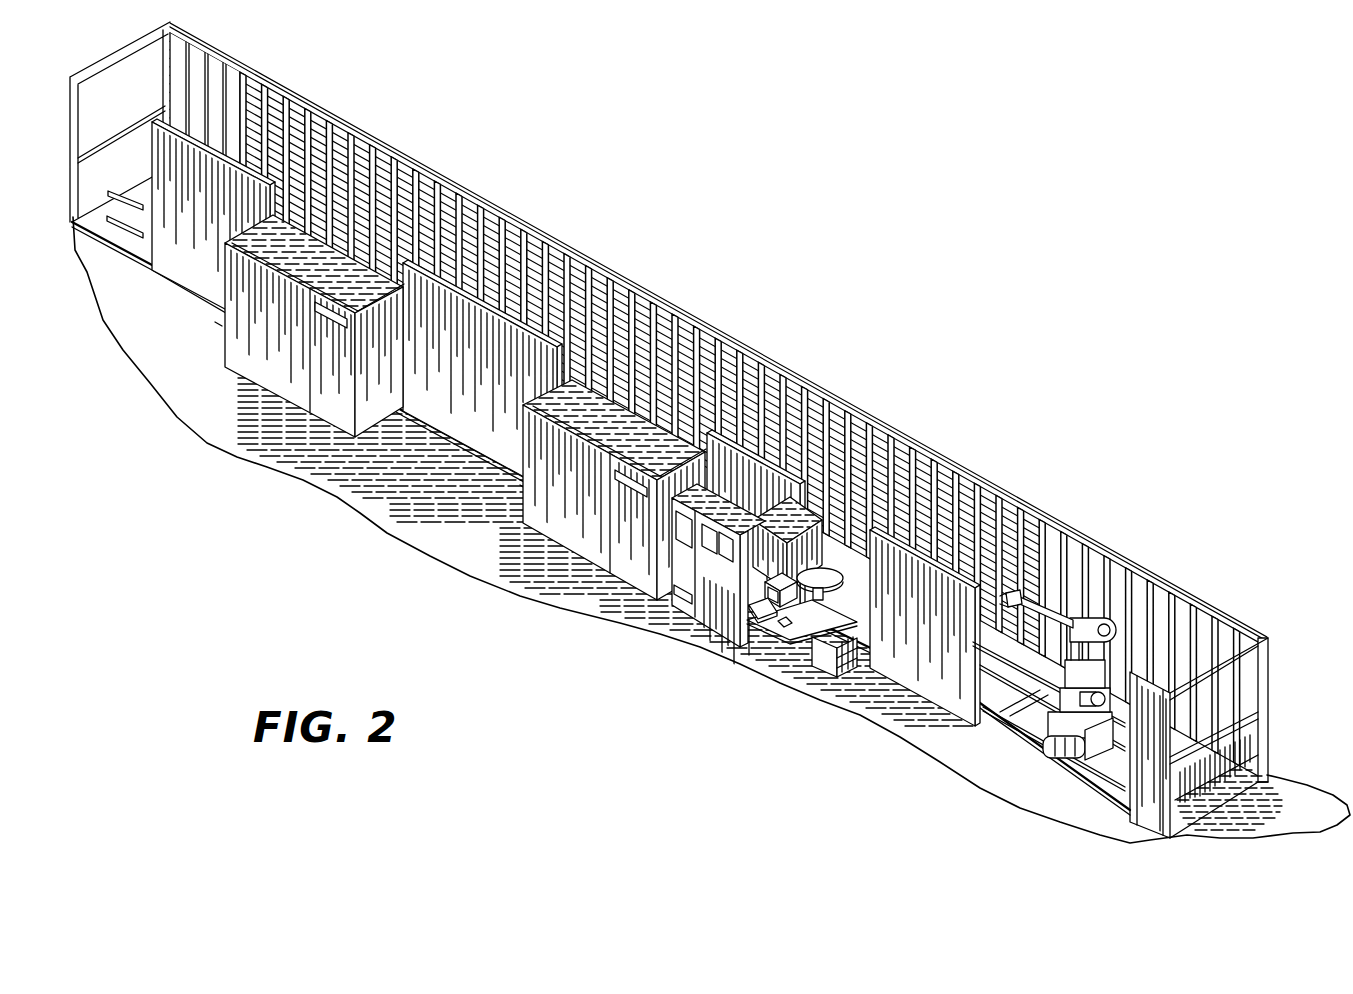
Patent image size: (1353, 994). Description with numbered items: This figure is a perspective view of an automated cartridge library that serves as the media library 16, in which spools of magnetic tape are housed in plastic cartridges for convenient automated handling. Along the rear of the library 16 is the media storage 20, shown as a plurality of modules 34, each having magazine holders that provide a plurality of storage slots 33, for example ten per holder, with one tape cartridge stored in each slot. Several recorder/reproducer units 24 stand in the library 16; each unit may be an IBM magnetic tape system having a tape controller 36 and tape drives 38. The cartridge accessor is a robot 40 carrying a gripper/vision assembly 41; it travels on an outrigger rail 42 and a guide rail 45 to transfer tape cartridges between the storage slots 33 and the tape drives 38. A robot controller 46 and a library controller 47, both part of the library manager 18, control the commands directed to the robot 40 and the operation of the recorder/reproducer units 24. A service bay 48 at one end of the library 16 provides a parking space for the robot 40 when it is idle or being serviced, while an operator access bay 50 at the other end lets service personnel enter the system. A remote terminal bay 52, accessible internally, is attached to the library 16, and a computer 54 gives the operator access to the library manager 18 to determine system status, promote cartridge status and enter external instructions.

The media library 16 is at (433, 122).
The library manager 18 is at (672, 546).
The media storage 20 is at (149, 277).
The recorder/reproducer unit 24 is at (214, 339).
The storage slot 33 is at (660, 302).
The module 34 is at (208, 283).
The tape controller 36 is at (299, 326).
The tape drive 38 is at (270, 358).
The robot 40 is at (1082, 604).
The gripper/vision assembly 41 is at (1023, 592).
The outrigger rail 42 is at (989, 714).
The guide rail 45 is at (1055, 697).
The robot controller 46 is at (712, 612).
The library controller 47 is at (672, 600).
The service bay 48 is at (1022, 713).
The operator access bay 50 is at (96, 166).
The remote terminal bay 52 is at (793, 517).
The computer 54 is at (782, 637).